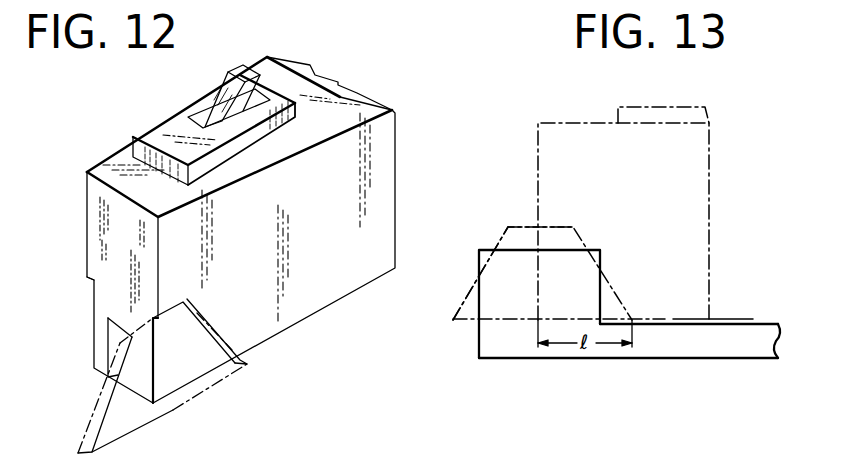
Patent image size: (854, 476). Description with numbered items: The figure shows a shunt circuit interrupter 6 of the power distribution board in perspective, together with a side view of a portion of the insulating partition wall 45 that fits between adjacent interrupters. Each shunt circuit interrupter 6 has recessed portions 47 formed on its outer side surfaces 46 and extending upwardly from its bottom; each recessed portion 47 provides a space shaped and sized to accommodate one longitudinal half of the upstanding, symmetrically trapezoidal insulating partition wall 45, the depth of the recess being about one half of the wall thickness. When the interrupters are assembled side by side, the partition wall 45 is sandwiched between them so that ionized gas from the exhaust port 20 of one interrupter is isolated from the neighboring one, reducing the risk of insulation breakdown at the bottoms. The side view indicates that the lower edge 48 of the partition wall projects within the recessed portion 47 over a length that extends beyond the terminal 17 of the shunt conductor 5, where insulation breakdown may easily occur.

In FIG. 13, the shunt conductor 5 is at (687, 318).
In FIG. 12, the shunt circuit interrupter 6 is at (392, 112).
In FIG. 13, the shunt circuit interrupter 6 is at (568, 122).
In FIG. 13, the terminal 17 is at (600, 252).
In FIG. 12, the exhaust port 20 is at (117, 333).
In FIG. 12, the insulating partition wall 45 is at (95, 410).
In FIG. 13, the insulating partition wall 45 is at (515, 227).
In FIG. 12, the outer side surface 46 is at (87, 195).
In FIG. 12, the recessed portion 47 is at (93, 313).
In FIG. 13, the recessed portion 47 is at (573, 227).
In FIG. 13, the lower edge 48 is at (463, 322).